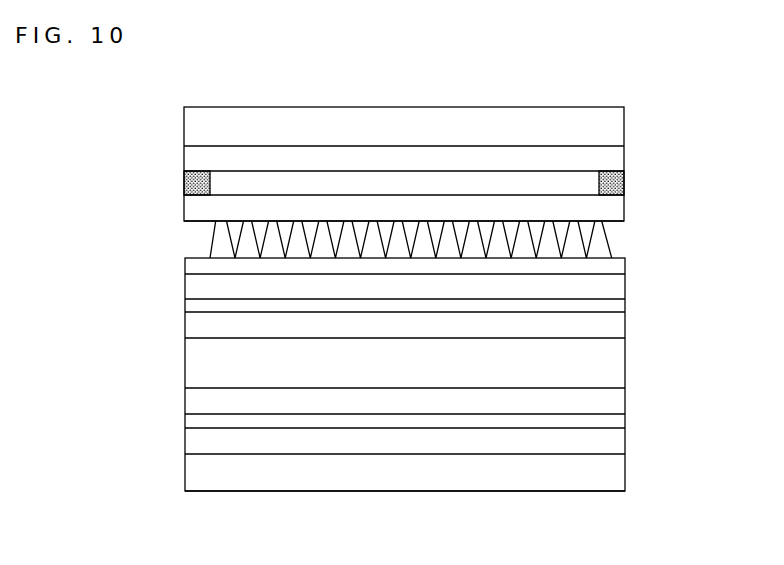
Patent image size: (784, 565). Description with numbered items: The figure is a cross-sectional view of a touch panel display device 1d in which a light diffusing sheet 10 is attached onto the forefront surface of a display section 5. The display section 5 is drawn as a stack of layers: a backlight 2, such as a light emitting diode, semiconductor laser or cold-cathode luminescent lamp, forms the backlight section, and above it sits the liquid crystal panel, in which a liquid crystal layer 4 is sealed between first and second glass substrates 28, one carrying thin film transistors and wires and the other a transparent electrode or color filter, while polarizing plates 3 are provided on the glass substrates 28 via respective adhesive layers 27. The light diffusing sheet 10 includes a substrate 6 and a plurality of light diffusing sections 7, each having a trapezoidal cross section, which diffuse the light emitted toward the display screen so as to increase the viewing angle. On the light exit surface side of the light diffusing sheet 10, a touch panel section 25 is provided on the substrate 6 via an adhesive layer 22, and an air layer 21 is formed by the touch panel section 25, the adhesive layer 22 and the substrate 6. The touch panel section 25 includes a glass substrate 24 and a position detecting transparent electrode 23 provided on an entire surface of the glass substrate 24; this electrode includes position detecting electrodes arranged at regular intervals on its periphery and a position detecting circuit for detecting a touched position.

The display device 1d is at (640, 516).
The backlight 2 is at (425, 475).
The polarizing plate 3 is at (620, 328).
The liquid crystal layer 4 is at (620, 363).
The display section 5 is at (447, 372).
The substrate 6 is at (621, 209).
The light diffusing section 7 is at (600, 238).
The light diffusing sheet 10 is at (446, 226).
The air layer 21 is at (592, 172).
The adhesive layer 22 is at (430, 182).
The position detecting transparent electrode 23 is at (614, 153).
The glass substrate 24 is at (618, 116).
The touch panel section 25 is at (450, 161).
The adhesive layer 27 is at (620, 268).
The glass substrate 28 is at (620, 288).